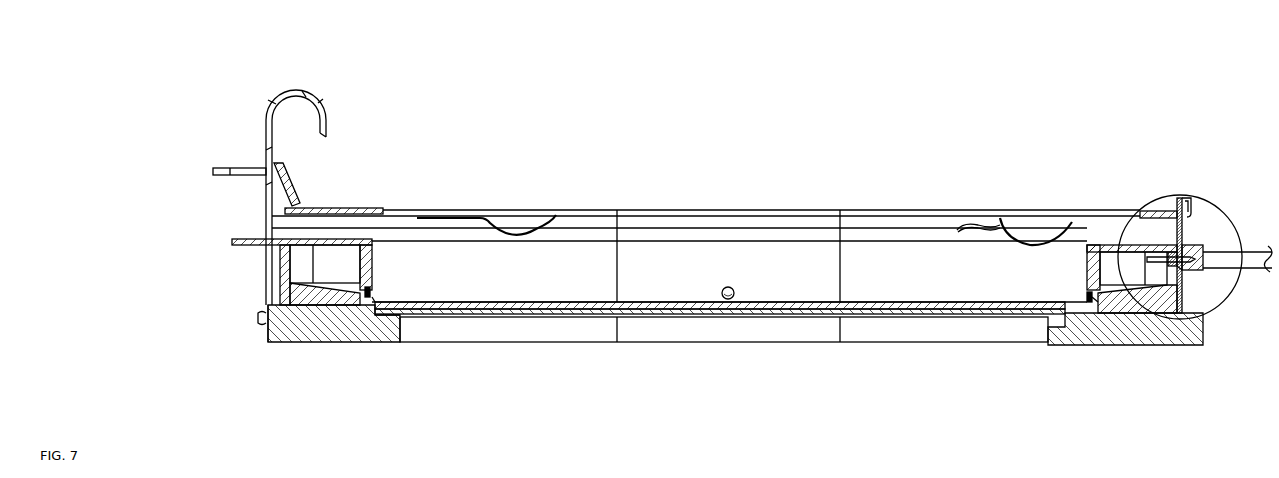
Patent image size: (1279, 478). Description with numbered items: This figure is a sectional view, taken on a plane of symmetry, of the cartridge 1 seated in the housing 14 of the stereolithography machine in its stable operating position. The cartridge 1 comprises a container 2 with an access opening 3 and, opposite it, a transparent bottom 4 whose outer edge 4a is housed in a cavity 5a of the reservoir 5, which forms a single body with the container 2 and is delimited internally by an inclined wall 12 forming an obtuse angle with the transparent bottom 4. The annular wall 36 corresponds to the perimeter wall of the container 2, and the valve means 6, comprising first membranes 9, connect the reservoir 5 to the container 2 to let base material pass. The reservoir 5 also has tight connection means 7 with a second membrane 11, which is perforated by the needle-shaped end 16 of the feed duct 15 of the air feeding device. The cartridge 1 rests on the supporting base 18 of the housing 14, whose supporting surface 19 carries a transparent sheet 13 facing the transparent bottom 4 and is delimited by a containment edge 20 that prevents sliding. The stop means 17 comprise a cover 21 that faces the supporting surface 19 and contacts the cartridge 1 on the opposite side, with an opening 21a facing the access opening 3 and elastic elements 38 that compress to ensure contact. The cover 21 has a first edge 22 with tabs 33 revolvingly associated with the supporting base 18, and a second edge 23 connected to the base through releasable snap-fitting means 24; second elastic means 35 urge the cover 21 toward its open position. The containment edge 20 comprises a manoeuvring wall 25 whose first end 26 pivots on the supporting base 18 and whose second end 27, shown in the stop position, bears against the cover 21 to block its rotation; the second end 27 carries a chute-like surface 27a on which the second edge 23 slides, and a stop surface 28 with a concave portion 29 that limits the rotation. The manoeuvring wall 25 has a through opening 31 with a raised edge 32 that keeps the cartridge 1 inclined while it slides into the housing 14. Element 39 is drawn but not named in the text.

The cartridge 1 is at (1100, 240).
The container 2 is at (665, 258).
The access opening 3 is at (727, 241).
The transparent bottom 4 is at (563, 310).
The outer edge 4a is at (352, 317).
The reservoir 5 is at (307, 303).
The cavity 5a is at (347, 307).
The valve means 6 is at (375, 298).
The tight connection means 7 is at (1189, 255).
The first membrane 9 is at (369, 303).
The second membrane 11 is at (1180, 270).
The inclined wall 12 is at (1140, 302).
The transparent sheet 13 is at (695, 314).
The housing 14 is at (1113, 236).
The feed duct 15 is at (1225, 256).
The needle-shaped end 16 is at (1157, 257).
The stop means 17 is at (513, 198).
The supporting base 18 is at (1065, 332).
The supporting surface 19 is at (915, 314).
The containment edge 20 is at (1195, 313).
The cover 21 is at (364, 208).
The opening 21a is at (858, 208).
The first edge 22 is at (1187, 194).
The second edge 23 is at (286, 192).
The releasable snap-fitting means 24 is at (299, 201).
The manoeuvring wall 25 is at (265, 297).
The first end 26 is at (261, 333).
The second end 27 is at (287, 163).
The chute-like surface 27a is at (290, 167).
The stop surface 28 is at (318, 100).
The concave portion 29 is at (288, 90).
The through opening 31 is at (262, 207).
The edge 32 is at (263, 283).
The tabs 33 is at (1188, 216).
The second elastic means 35 is at (1012, 227).
The annular wall 36 is at (783, 252).
The elastic elements 38 is at (552, 218).
The plate 39 is at (236, 237).